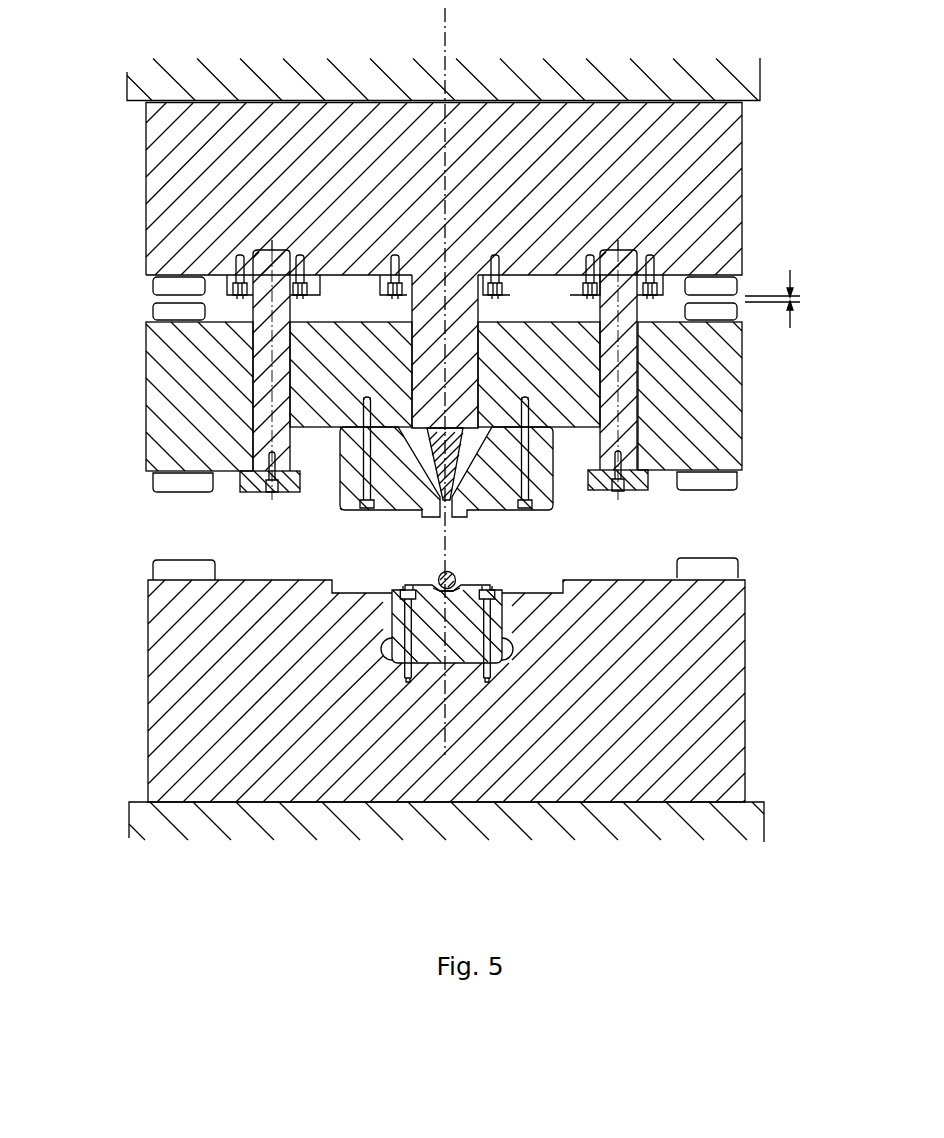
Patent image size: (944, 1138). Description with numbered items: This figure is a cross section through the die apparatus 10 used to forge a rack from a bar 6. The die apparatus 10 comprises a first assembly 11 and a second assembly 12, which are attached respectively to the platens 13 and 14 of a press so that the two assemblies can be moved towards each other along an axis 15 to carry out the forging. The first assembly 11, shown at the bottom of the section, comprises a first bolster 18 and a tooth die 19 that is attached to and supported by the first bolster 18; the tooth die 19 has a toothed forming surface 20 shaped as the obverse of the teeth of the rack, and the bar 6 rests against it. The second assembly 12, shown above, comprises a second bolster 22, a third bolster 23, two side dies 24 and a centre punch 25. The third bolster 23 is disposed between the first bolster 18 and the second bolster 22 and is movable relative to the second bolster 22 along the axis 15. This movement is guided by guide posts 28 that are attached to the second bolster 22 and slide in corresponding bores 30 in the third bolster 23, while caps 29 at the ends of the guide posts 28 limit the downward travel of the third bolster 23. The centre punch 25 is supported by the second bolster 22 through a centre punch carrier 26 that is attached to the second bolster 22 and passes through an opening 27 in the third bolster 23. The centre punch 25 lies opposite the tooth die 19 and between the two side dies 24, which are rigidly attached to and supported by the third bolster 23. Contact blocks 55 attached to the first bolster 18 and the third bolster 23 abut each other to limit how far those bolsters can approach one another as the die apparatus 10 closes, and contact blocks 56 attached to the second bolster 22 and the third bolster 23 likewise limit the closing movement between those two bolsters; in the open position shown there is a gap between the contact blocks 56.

The bar 6 is at (452, 572).
The die apparatus 10 is at (770, 192).
The first assembly 11 is at (122, 673).
The second assembly 12 is at (113, 351).
The platen 13 is at (140, 822).
The platen 14 is at (133, 84).
The axis 15 is at (447, 26).
The first bolster 18 is at (172, 635).
The tooth die 19 is at (480, 592).
The toothed forming surface 20 is at (433, 584).
The second bolster 22 is at (165, 176).
The third bolster 23 is at (152, 371).
The side die 24 is at (412, 500).
The centre punch 25 is at (463, 497).
The centre punch carrier 26 is at (490, 362).
The opening 27 is at (560, 382).
The guide post 28 is at (264, 381).
The cap 29 is at (255, 492).
The bore 30 is at (254, 419).
The contact block 55 is at (176, 481).
The contact block 56 is at (185, 290).